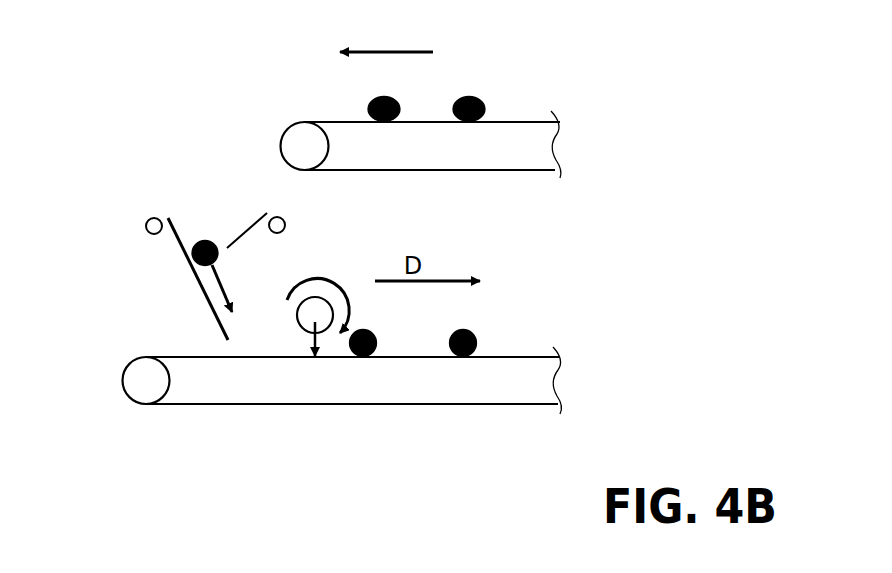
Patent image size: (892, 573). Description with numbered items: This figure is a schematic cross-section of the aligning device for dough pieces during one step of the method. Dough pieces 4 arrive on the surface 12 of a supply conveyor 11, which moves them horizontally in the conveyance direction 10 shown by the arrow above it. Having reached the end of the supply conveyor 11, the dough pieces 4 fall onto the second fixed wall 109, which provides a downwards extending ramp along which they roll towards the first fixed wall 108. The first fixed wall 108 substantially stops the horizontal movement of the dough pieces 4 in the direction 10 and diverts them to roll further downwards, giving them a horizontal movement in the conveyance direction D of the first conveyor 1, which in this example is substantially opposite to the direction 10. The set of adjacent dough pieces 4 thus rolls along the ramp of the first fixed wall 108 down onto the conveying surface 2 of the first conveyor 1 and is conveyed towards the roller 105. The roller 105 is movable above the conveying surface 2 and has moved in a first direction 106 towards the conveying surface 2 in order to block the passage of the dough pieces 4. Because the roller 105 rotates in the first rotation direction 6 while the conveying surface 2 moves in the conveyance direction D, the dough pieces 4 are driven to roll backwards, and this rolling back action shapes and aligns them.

The first conveyor 1 is at (433, 385).
The conveying surface 2 is at (517, 355).
The dough pieces 4 is at (398, 98).
The first rotation direction 6 is at (300, 300).
The conveyance direction of the supply conveyor 10 is at (386, 34).
The supply conveyor 11 is at (540, 147).
The surface of the supply conveyor 12 is at (512, 122).
The roller 105 is at (330, 312).
The first direction 106 is at (312, 340).
The first fixed wall 108 is at (198, 285).
The second fixed wall 109 is at (247, 233).